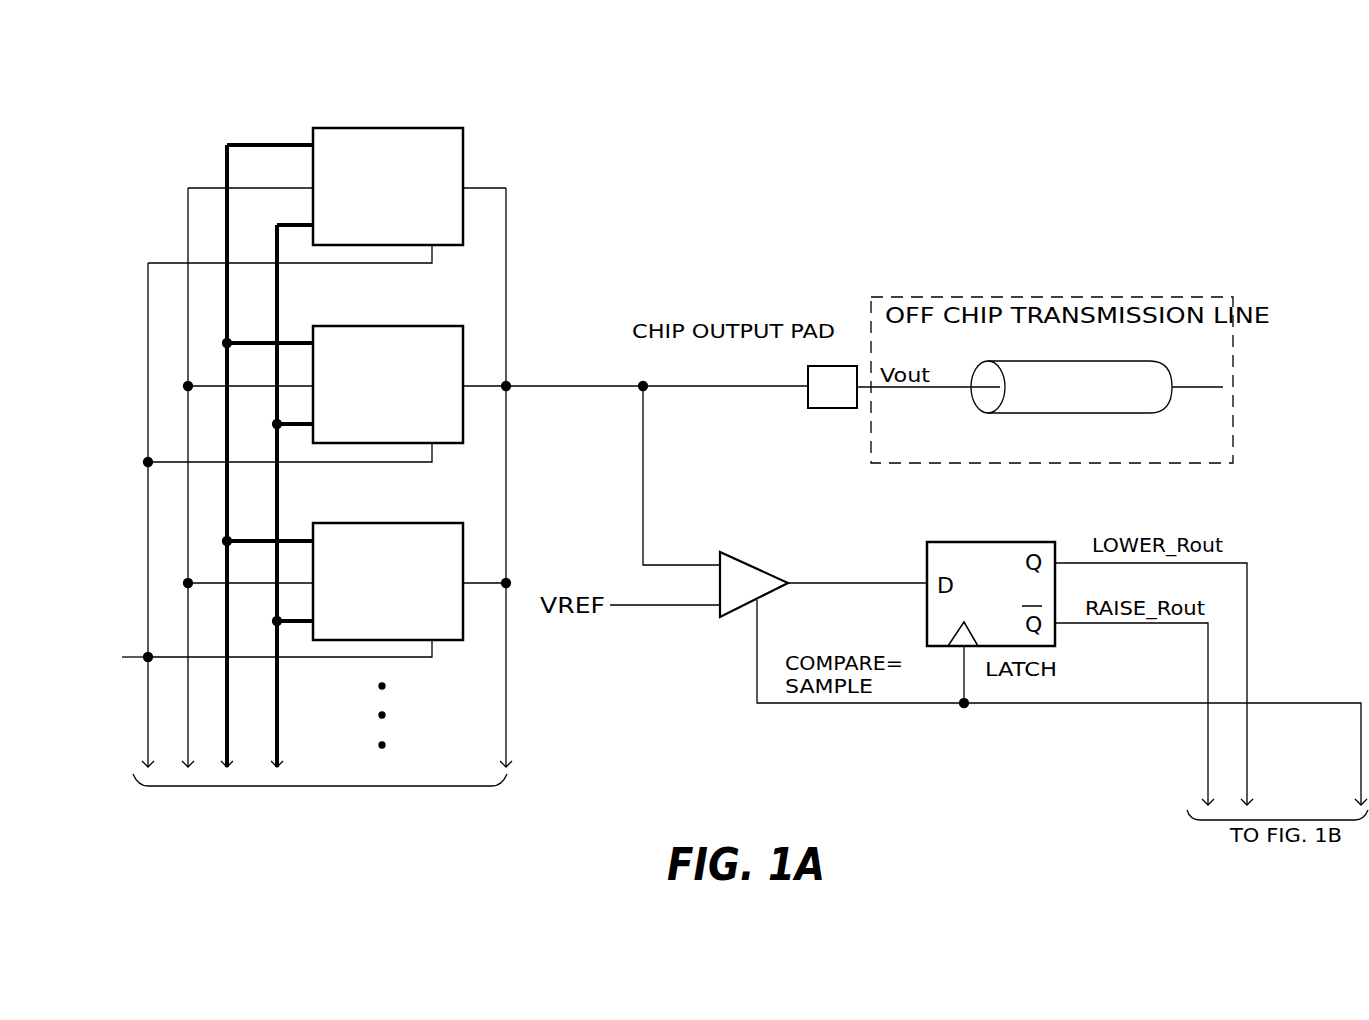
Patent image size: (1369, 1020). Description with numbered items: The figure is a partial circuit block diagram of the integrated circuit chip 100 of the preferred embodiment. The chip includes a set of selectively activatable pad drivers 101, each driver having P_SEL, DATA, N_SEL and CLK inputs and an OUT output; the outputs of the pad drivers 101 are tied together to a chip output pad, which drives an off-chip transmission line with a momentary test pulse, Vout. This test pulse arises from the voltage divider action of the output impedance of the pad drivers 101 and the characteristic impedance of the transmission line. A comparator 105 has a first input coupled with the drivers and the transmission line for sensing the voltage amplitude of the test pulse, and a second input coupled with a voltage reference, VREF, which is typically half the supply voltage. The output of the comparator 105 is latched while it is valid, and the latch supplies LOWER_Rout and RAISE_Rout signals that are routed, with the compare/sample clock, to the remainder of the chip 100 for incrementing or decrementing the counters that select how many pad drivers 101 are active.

The integrated circuit chip 100 is at (228, 90).
The selectively activatable pad drivers 101 is at (463, 167).
The comparator 105 is at (742, 606).